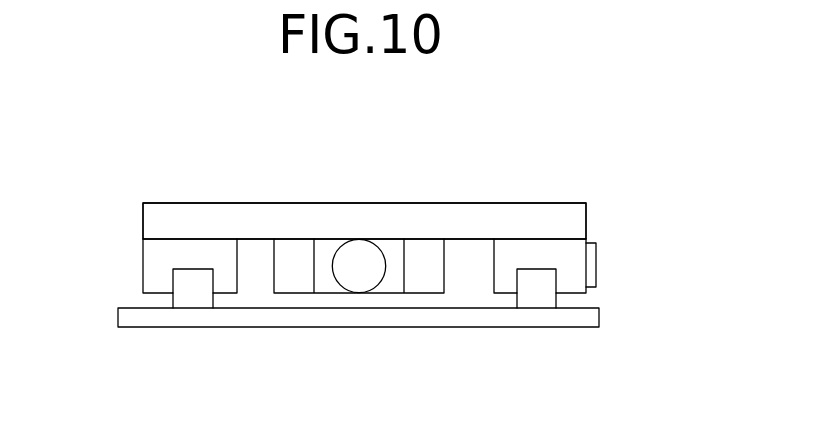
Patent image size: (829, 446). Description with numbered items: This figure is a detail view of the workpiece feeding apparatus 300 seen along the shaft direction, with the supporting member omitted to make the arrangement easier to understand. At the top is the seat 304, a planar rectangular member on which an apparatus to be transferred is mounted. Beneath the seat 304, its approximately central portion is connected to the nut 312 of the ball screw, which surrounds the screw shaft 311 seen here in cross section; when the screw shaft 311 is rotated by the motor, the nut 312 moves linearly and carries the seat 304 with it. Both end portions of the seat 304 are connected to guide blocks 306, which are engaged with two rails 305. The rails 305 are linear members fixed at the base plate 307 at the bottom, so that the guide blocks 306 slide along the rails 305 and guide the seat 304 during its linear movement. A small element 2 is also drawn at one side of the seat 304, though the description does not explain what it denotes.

The workpiece feeding apparatus 300 is at (138, 163).
The seat 304 is at (506, 225).
The guide blocks 306 is at (156, 268).
The rails 305 is at (196, 289).
The nut 312 is at (290, 275).
The screw shaft 311 is at (358, 266).
The base plate 307 is at (443, 317).
The terminal 2 is at (594, 251).